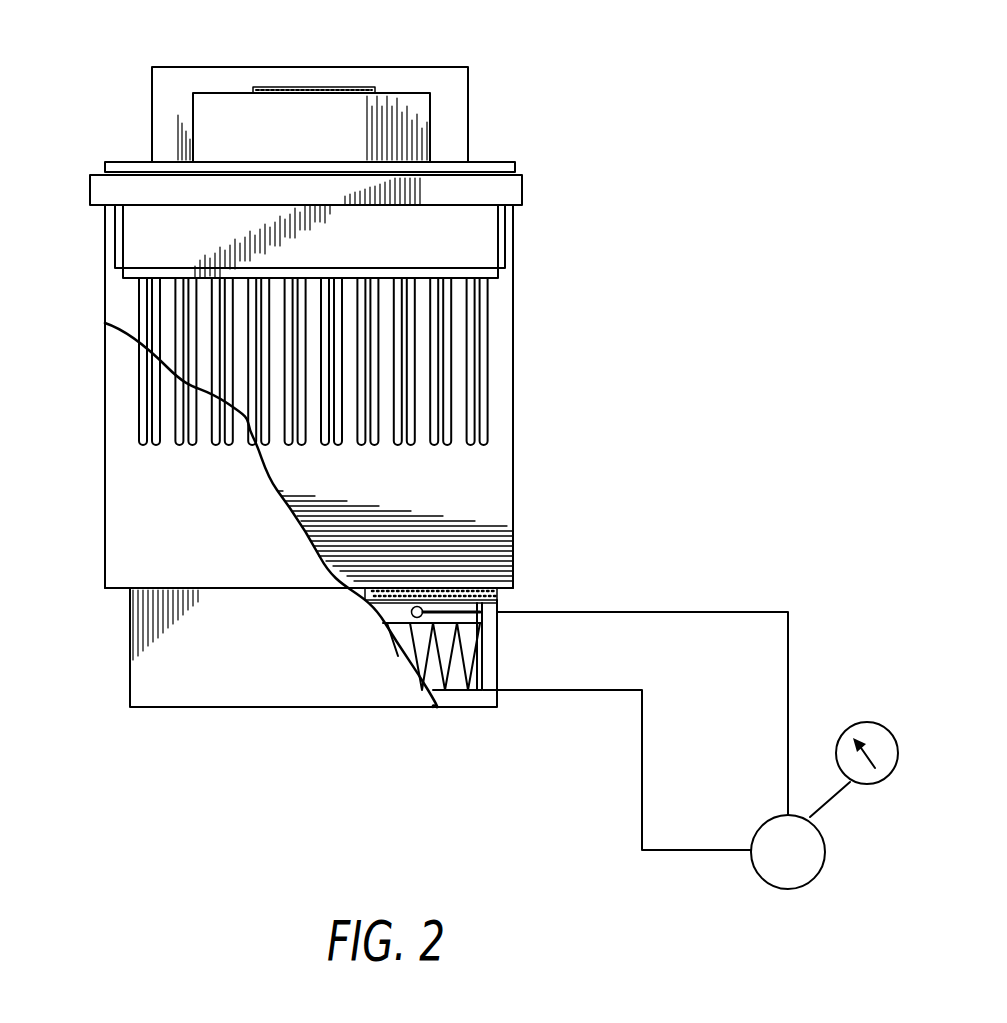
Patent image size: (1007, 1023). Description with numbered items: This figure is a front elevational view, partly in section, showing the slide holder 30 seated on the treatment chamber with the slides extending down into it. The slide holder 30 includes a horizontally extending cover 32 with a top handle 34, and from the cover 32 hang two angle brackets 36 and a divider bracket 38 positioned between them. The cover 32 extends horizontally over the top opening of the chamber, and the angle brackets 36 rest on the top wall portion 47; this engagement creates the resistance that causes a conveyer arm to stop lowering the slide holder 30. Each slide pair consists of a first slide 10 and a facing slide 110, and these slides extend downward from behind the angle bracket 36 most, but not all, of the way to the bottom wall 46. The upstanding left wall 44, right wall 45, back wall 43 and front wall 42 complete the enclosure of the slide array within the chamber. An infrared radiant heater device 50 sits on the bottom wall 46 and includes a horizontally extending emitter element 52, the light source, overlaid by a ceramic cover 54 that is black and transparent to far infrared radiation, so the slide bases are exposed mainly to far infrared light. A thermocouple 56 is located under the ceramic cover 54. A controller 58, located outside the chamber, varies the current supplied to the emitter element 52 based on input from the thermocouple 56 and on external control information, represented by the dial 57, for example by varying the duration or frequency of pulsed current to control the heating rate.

The first slide 10 is at (140, 290).
The facing slide 110 is at (150, 320).
The slide holder 30 is at (150, 158).
The cover 32 is at (105, 165).
The top handle 34 is at (177, 88).
The angle bracket 36 is at (510, 228).
The divider bracket 38 is at (150, 240).
The front wall 42 is at (143, 482).
The back wall 43 is at (480, 485).
The left wall 44 is at (105, 400).
The right wall 45 is at (515, 528).
The bottom wall 46 is at (122, 591).
The top wall portion 47 is at (92, 195).
The infrared radiant heater device 50 is at (170, 680).
The emitter element 52 is at (455, 683).
The ceramic cover 54 is at (510, 594).
The thermocouple 56 is at (480, 615).
The dial 57 is at (845, 724).
The controller 58 is at (775, 865).